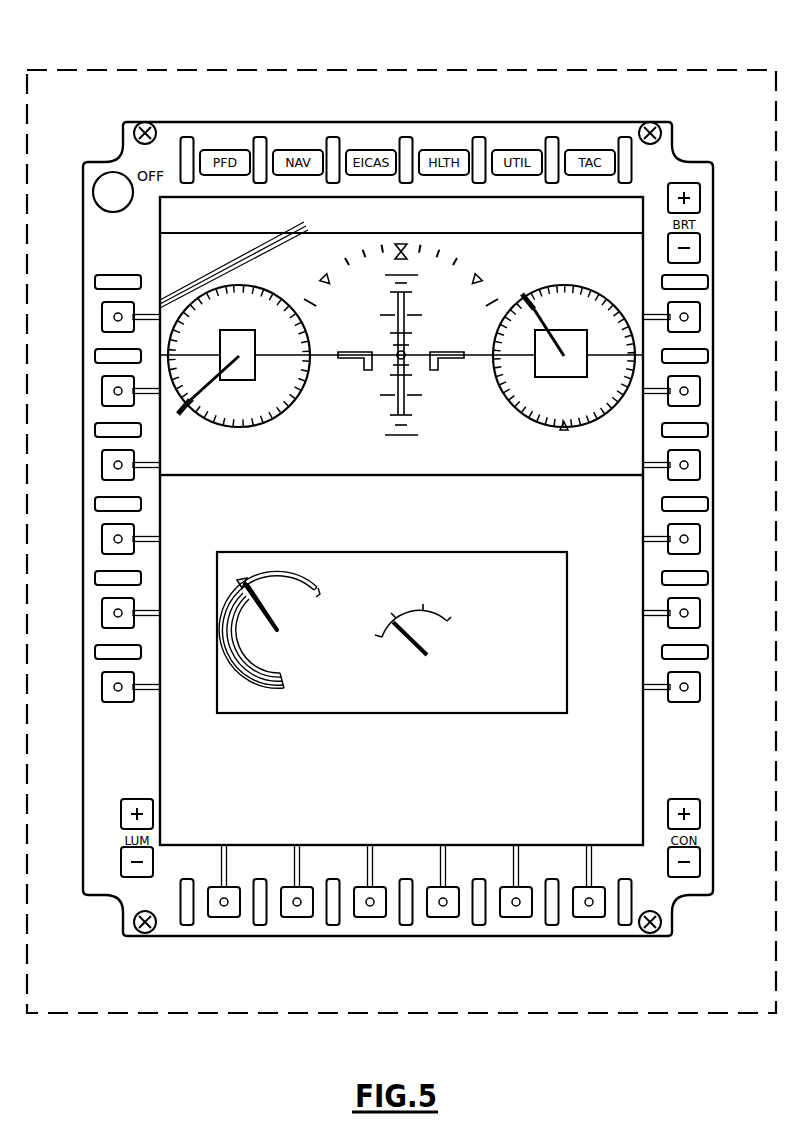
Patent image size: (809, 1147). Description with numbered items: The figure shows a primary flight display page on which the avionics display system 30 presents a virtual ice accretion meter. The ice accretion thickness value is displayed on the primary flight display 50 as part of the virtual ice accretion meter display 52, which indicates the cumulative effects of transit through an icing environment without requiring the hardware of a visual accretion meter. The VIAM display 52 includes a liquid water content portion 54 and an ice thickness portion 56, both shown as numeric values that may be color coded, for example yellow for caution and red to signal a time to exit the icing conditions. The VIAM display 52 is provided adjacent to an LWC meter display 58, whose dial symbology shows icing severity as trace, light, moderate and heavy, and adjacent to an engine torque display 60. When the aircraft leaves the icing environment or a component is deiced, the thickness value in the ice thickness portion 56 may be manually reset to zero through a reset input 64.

The avionics display system 30 is at (650, 64).
The primary flight display 50 is at (605, 270).
The virtual ice accretion meter (VIAM) display 52 is at (607, 522).
The liquid water content (LWC) portion 54 is at (540, 590).
The ice thickness portion 56 is at (422, 674).
The LWC meter display 58 is at (418, 700).
The engine torque display 60 is at (175, 672).
The reset input 64 is at (686, 689).